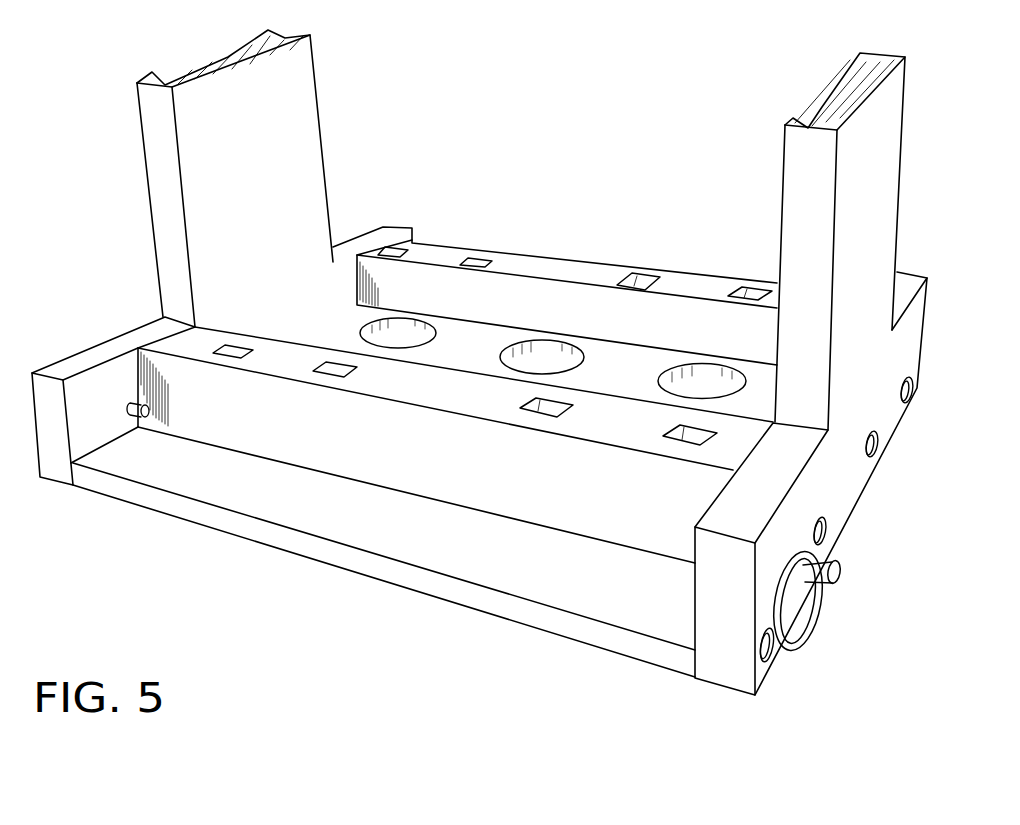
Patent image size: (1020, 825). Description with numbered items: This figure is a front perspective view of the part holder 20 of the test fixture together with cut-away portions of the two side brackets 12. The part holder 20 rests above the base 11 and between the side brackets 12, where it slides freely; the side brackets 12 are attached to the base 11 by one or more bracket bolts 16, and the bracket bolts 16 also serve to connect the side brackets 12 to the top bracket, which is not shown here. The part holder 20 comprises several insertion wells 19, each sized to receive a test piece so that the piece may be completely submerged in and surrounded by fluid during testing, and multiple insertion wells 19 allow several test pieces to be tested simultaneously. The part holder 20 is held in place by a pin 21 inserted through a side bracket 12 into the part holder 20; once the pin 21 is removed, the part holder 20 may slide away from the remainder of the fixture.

The base 11 is at (460, 593).
The side bracket 12 is at (108, 350).
The bracket bolt 16 is at (908, 392).
The insertion well 19 is at (390, 248).
The part holder 20 is at (673, 550).
The pin 21 is at (840, 575).